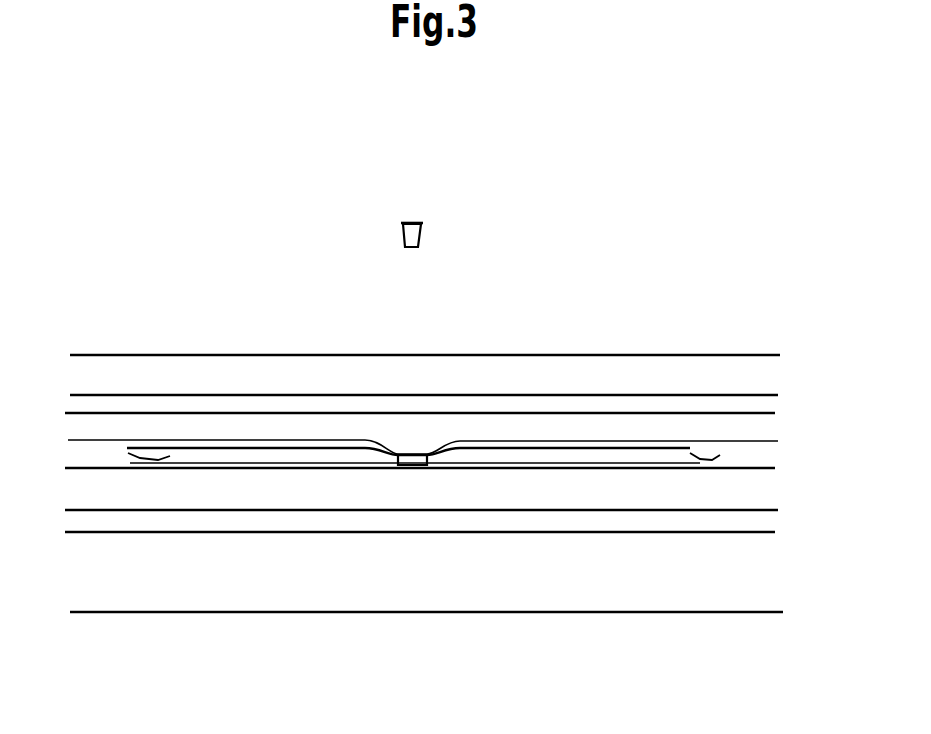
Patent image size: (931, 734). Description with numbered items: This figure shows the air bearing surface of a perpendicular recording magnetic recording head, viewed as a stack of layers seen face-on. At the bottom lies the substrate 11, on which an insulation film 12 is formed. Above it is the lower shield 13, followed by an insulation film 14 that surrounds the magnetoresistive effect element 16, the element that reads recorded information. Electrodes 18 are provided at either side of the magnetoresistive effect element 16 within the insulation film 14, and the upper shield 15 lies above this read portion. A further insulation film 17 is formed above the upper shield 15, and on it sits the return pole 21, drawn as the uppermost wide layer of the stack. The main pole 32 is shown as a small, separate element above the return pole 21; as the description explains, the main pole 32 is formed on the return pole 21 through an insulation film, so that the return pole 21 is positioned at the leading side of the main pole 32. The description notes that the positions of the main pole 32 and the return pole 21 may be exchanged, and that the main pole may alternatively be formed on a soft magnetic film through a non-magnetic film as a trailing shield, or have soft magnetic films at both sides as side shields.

The substrate 11 is at (735, 569).
The insulation film 12 is at (733, 526).
The lower shield 13 is at (737, 491).
The insulation film 14 is at (568, 441).
The upper shield 15 is at (733, 433).
The magnetoresistive effect element 16 is at (413, 465).
The insulation film 17 is at (735, 406).
The electrode 18 is at (128, 448).
The return pole 21 is at (735, 377).
The main pole 32 is at (403, 233).